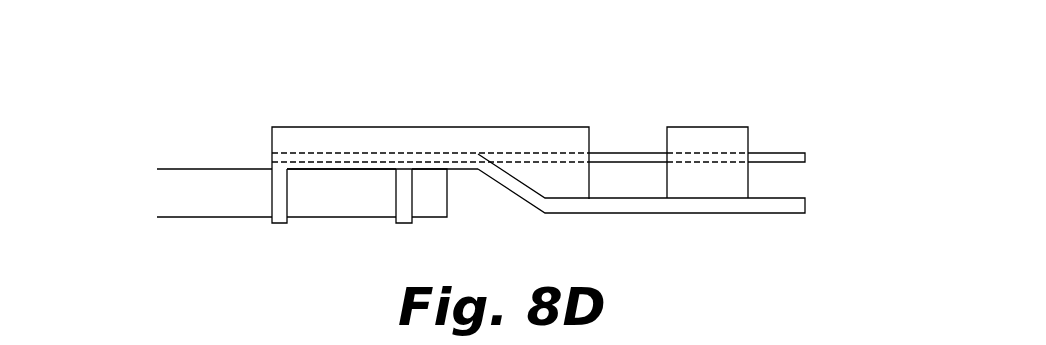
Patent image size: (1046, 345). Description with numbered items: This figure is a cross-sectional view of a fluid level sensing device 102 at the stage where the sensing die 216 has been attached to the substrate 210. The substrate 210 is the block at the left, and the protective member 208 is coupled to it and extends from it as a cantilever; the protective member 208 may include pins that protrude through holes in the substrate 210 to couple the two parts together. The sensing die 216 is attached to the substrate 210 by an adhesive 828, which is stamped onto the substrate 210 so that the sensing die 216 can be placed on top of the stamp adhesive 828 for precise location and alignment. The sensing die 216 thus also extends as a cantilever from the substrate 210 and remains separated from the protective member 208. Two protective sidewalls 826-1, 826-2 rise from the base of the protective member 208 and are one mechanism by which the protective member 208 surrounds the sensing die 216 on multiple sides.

The fluid level sensing device 102 is at (223, 72).
The substrate 210 is at (188, 193).
The protective sidewall 826-1 is at (540, 140).
The protective sidewall 826-2 is at (705, 140).
The sensing die 216 is at (790, 153).
The adhesive 828 is at (272, 163).
The protective member 208 is at (723, 208).